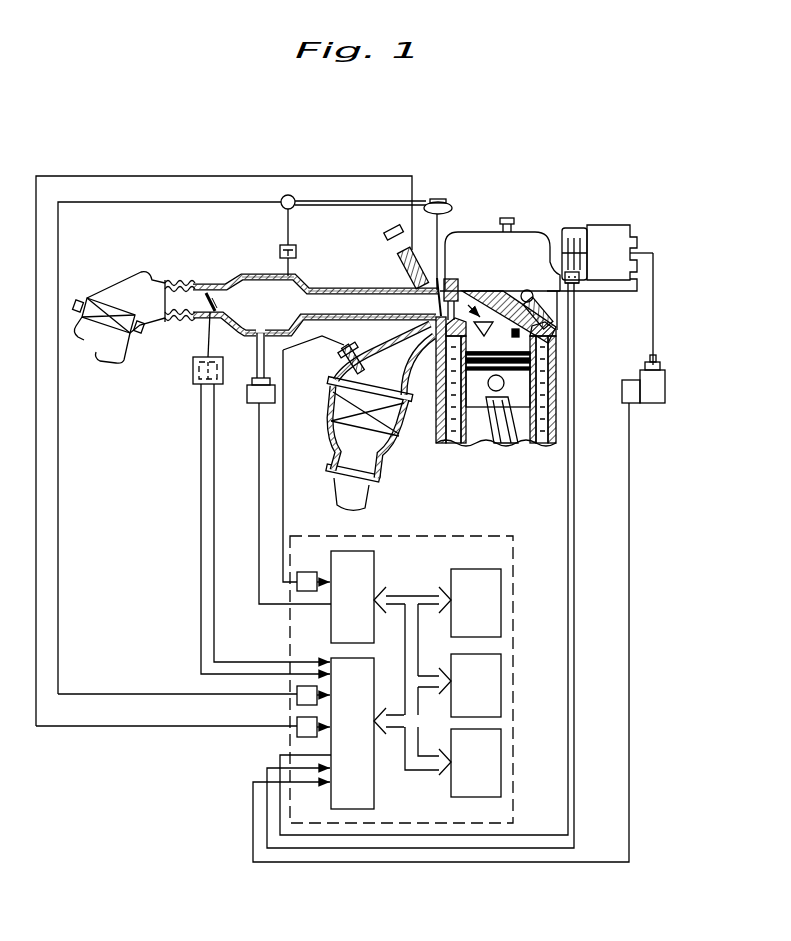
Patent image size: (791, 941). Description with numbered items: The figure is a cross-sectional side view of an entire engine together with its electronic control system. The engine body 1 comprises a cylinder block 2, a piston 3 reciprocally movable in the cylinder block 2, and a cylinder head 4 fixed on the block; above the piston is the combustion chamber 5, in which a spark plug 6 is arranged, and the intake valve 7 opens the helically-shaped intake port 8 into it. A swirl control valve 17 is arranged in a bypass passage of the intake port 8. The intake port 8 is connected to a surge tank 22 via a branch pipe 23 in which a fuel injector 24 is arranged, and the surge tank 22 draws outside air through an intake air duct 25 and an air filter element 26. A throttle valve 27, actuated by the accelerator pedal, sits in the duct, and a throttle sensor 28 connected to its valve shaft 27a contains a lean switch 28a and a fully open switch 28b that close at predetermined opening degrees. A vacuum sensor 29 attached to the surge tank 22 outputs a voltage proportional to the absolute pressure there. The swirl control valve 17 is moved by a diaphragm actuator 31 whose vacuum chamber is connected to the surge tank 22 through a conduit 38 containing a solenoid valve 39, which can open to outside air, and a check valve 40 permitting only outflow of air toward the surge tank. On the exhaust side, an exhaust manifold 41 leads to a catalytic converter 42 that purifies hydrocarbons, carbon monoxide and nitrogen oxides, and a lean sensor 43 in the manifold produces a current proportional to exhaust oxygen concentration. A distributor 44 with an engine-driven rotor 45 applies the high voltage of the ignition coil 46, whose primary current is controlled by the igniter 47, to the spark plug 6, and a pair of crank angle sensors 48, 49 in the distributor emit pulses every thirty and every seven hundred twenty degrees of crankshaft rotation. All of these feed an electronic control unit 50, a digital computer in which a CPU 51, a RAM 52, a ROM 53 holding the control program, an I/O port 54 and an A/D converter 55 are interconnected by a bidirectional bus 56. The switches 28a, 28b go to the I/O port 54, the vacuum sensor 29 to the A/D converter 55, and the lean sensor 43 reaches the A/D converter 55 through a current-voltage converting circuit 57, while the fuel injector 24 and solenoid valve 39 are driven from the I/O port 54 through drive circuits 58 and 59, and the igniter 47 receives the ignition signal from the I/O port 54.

The engine body 1 is at (434, 439).
The cylinder block 2 is at (557, 425).
The piston 3 is at (477, 398).
The cylinder head 4 is at (537, 320).
The combustion chamber 5 is at (488, 349).
The spark plug 6 is at (527, 290).
The intake valve 7 is at (491, 300).
The helically-shaped intake port 8 is at (462, 300).
The swirl control valve 17 is at (436, 304).
The surge tank 22 is at (245, 274).
The branch pipe 23 is at (352, 288).
The fuel injector 24 is at (398, 265).
The intake air duct 25 is at (212, 282).
The air filter element 26 is at (108, 300).
The throttle valve 27 is at (204, 298).
The valve shaft 27a is at (216, 302).
The throttle sensor 28 is at (192, 380).
The lean switch 28a is at (192, 390).
The fully open switch 28b is at (196, 366).
The vacuum sensor 29 is at (245, 395).
The actuator 31 is at (430, 202).
The conduit 38 is at (292, 216).
The solenoid valve 39 is at (282, 208).
The check valve 40 is at (296, 252).
The exhaust manifold 41 is at (382, 358).
The catalytic converter 42 is at (330, 404).
The lean sensor 43 is at (343, 350).
The distributor 44 is at (605, 232).
The rotor 45 is at (563, 243).
The ignition coil 46 is at (653, 404).
The igniter 47 is at (622, 387).
The crank angle sensor 48 is at (580, 287).
The crank angle sensor 49 is at (584, 272).
The electronic control unit 50 is at (462, 536).
The central processing unit (CPU) 51 is at (457, 582).
The random-access memory (RAM) 52 is at (460, 658).
The read-only memory (ROM) 53 is at (460, 742).
The input/output (I/O) unit 54 is at (362, 795).
The analog-digital (A/D) converter 55 is at (363, 564).
The bidirectional bus 56 is at (426, 770).
The current-voltage converting circuit 57 is at (303, 577).
The drive circuit 58 is at (295, 728).
The drive circuit 59 is at (297, 692).